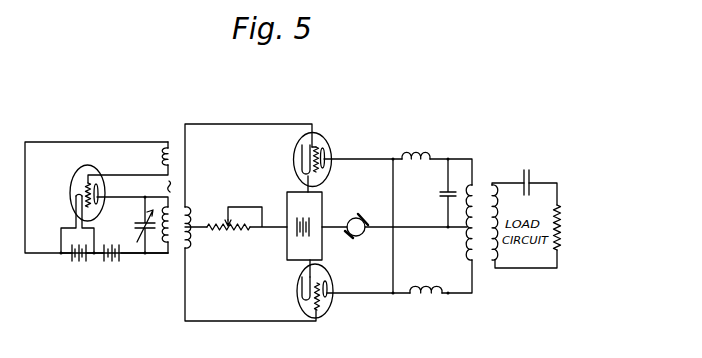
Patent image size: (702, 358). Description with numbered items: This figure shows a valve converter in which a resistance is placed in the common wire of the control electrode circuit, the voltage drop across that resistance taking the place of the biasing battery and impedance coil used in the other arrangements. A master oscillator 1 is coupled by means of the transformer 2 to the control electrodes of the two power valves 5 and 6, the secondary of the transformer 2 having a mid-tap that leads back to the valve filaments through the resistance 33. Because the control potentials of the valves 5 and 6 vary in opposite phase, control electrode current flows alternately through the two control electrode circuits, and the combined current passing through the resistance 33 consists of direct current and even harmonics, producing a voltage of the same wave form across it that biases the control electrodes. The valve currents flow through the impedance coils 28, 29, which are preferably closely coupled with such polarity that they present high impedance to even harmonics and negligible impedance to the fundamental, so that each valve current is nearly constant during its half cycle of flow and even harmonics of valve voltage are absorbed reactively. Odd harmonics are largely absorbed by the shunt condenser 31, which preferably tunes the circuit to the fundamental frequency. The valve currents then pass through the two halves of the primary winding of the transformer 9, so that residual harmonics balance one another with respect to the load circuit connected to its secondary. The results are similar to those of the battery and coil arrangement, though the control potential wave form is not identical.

The master oscillator 1 is at (73, 172).
The transformer 2 is at (177, 262).
The power valve 5 is at (330, 151).
The power valve 6 is at (335, 302).
The transformer 9 is at (494, 176).
The impedance coil 28 is at (432, 153).
The impedance coil 29 is at (428, 300).
The shunt condenser 31 is at (440, 194).
The resistance 33 is at (231, 232).